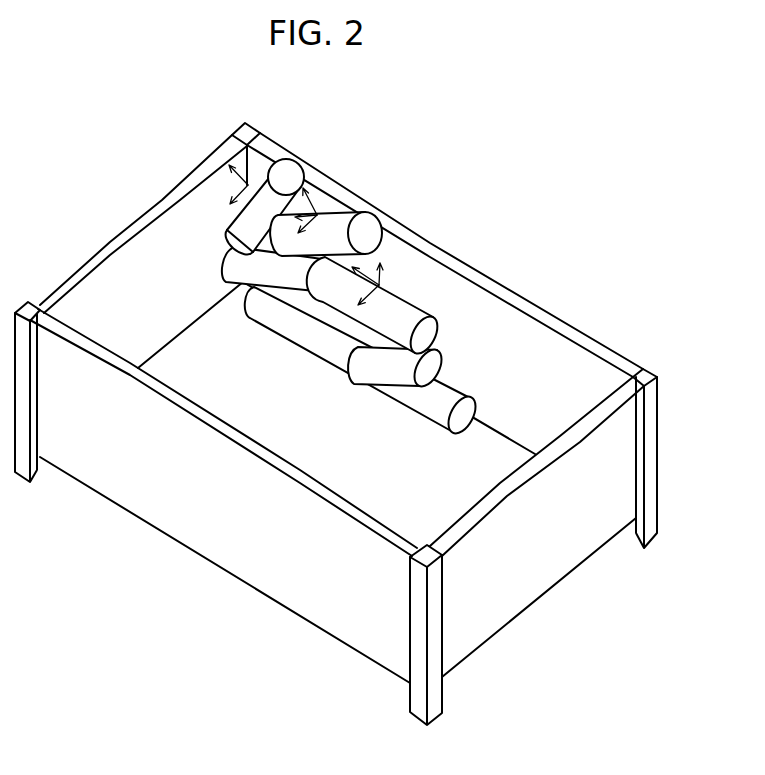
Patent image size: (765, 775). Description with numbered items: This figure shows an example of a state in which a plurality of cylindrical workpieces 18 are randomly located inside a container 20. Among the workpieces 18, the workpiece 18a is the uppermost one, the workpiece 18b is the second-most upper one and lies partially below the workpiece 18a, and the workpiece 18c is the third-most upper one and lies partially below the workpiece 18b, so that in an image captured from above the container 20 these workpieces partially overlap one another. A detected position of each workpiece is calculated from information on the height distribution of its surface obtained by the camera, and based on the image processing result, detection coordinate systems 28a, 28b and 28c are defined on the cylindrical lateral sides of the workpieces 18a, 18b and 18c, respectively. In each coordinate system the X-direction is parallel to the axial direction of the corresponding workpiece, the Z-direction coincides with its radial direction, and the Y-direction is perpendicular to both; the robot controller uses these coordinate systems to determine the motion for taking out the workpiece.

The workpieces 18 is at (293, 395).
The workpiece 18a is at (279, 168).
The workpiece 18b is at (365, 227).
The workpiece 18c is at (432, 333).
The container 20 is at (580, 565).
The detection coordinate system 28a is at (207, 193).
The detection coordinate system 28b is at (323, 189).
The detection coordinate system 28c is at (422, 269).